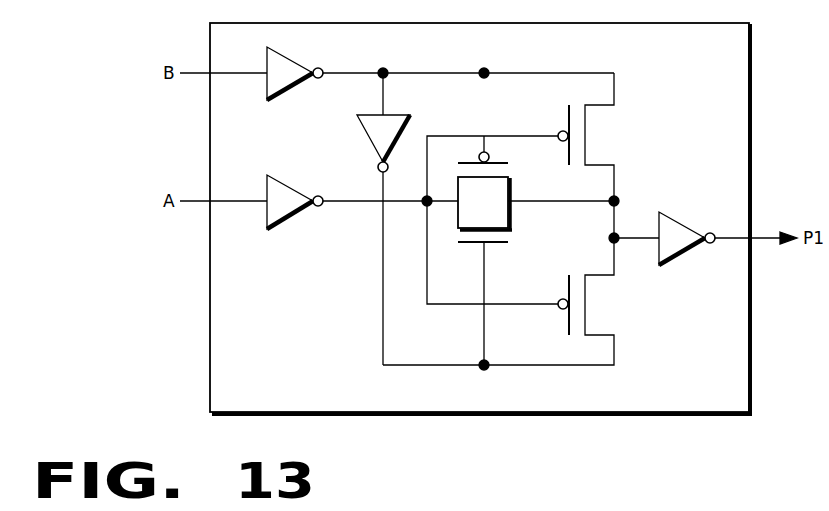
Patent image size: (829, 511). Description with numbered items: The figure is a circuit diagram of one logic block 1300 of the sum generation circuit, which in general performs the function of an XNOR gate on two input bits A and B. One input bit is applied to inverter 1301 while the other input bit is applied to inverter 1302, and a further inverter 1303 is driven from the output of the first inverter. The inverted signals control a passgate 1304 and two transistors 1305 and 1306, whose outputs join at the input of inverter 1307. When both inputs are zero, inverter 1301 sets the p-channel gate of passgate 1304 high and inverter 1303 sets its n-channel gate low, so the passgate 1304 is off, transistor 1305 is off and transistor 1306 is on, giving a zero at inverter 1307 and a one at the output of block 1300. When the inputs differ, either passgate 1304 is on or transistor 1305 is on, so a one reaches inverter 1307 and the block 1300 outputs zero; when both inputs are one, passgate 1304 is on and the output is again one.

The logic block 1300 is at (721, 51).
The inverter 1301 is at (289, 103).
The inverter 1302 is at (290, 230).
The inverter 1303 is at (367, 133).
The passgate 1304 is at (501, 210).
The transistor 1305 is at (634, 145).
The transistor 1306 is at (634, 313).
The inverter 1307 is at (700, 208).